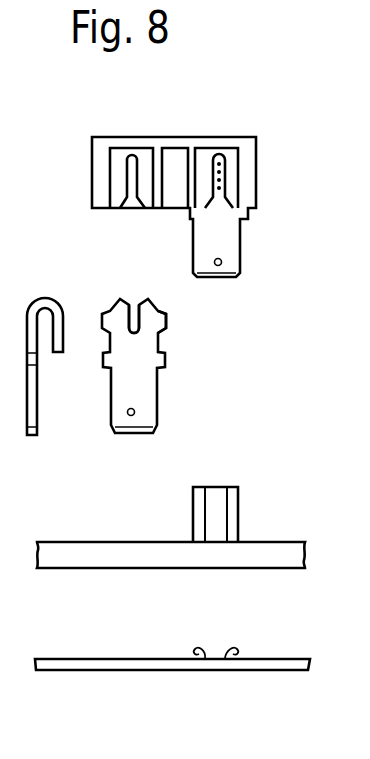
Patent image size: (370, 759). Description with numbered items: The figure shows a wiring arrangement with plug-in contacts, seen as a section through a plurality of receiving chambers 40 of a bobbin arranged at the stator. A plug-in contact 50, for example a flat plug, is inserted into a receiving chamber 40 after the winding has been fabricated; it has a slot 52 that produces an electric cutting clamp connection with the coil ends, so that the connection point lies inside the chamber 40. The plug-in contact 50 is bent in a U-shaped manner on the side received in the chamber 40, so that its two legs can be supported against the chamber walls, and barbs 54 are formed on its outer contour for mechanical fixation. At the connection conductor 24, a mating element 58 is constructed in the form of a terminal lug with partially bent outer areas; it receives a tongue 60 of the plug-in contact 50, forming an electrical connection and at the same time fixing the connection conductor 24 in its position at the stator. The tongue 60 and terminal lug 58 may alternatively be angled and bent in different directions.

The connection conductor 24 is at (35, 559).
The receiving chamber 40 is at (120, 193).
The plug-in contact 50 is at (150, 354).
The slot 52 is at (133, 308).
The barb 54 is at (202, 339).
The mating element 58 is at (243, 512).
The tongue 60 is at (118, 392).